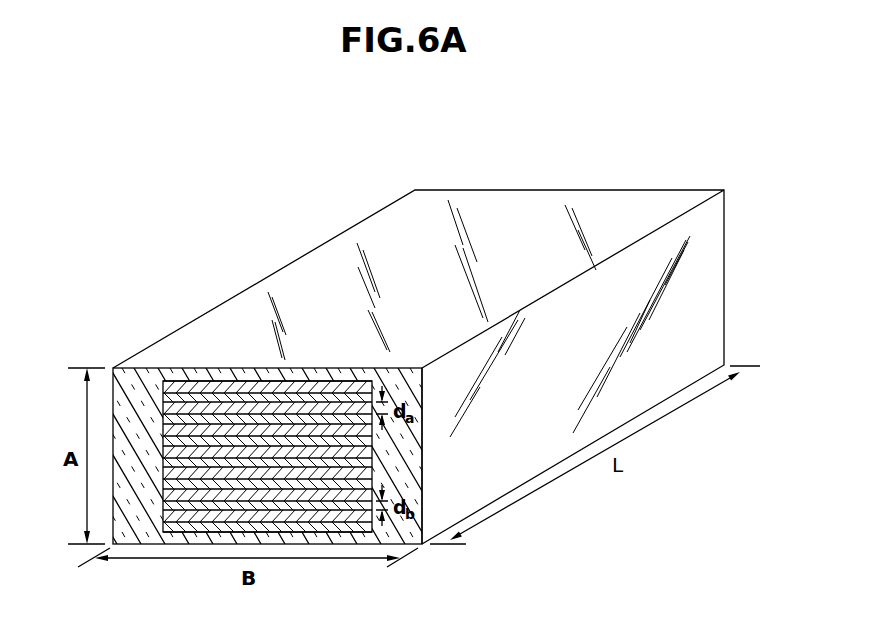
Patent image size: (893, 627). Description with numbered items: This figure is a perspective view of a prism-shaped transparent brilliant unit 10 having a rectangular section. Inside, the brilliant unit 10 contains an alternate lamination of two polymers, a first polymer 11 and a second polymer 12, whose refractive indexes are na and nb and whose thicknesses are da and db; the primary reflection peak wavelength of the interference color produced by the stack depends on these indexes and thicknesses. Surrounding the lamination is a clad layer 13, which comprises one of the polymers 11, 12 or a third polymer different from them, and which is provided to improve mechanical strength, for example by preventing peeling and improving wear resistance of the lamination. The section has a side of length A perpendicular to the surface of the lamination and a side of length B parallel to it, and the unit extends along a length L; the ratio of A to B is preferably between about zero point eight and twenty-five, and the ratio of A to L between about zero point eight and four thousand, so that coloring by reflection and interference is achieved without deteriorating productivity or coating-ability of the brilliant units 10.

The brilliant unit 10 is at (476, 165).
The first polymer 11 is at (186, 410).
The second polymer 12 is at (242, 383).
The clad layer 13 is at (413, 449).